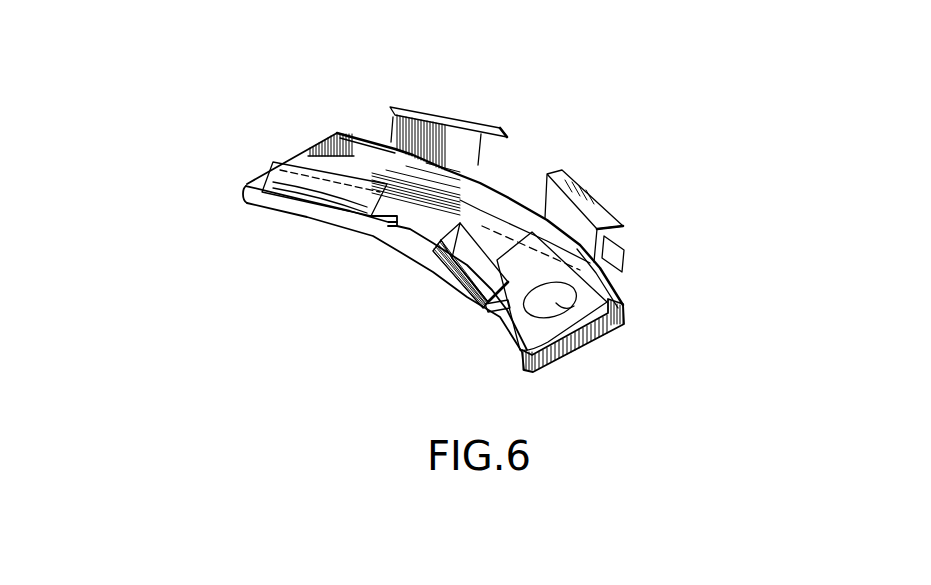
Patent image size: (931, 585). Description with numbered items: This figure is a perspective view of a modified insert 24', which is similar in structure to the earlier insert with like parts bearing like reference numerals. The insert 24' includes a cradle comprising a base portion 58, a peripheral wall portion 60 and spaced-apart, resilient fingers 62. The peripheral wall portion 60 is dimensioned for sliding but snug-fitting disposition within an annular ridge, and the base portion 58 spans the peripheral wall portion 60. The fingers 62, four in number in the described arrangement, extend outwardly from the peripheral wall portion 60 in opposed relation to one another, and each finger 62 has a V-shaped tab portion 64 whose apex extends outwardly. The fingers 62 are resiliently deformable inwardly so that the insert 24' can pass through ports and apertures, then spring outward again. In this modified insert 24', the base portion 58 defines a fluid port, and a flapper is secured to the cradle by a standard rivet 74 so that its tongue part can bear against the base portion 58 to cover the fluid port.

The modified insert 24' is at (340, 198).
The base portion 58 is at (611, 283).
The peripheral wall portion 60 is at (620, 324).
The resilient finger 62 is at (462, 223).
The V-shaped tab portion 64 is at (330, 137).
The rivet 74 is at (577, 323).